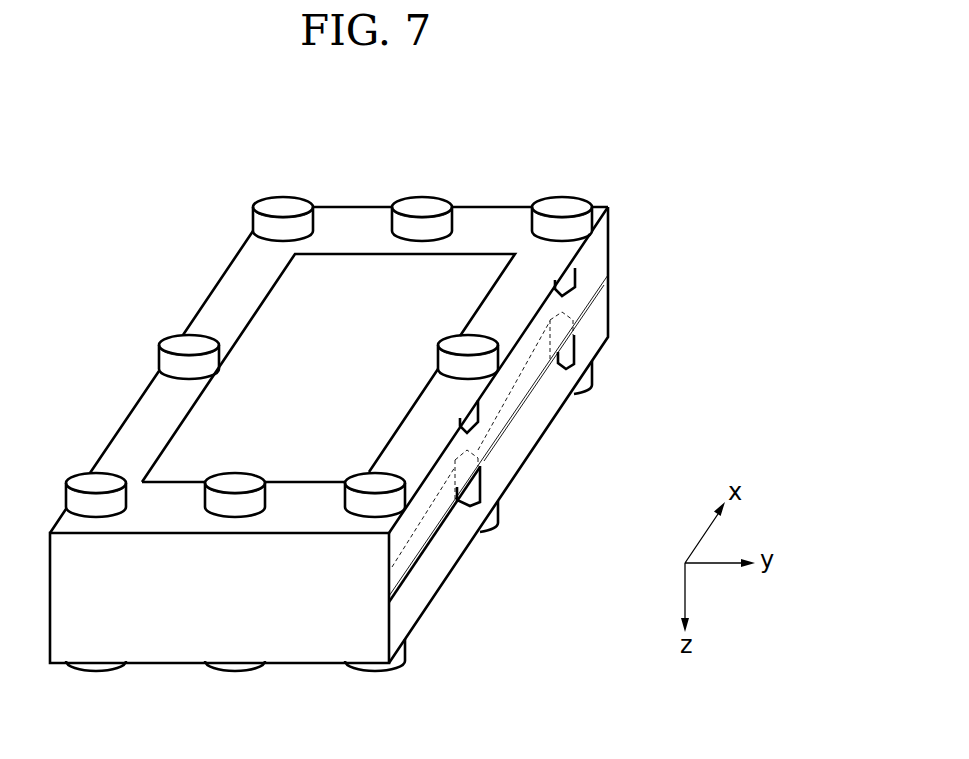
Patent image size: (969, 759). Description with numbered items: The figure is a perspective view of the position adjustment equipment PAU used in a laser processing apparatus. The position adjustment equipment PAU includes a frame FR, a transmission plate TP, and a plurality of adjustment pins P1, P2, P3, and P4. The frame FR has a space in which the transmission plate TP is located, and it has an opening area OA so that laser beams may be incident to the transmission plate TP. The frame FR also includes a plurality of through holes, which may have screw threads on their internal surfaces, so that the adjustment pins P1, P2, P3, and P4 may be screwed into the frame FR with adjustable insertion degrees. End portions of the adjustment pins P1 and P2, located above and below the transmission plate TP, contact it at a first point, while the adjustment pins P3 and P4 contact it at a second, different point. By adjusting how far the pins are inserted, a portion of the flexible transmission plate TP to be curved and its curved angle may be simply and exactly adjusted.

The position adjustment equipment PAU is at (640, 172).
The frame FR is at (356, 223).
The opening area OA is at (437, 298).
The transmission plate TP is at (587, 297).
The adjustment pin P1 is at (572, 348).
The adjustment pin P2 is at (571, 273).
The adjustment pin P3 is at (477, 486).
The adjustment pin P4 is at (476, 415).